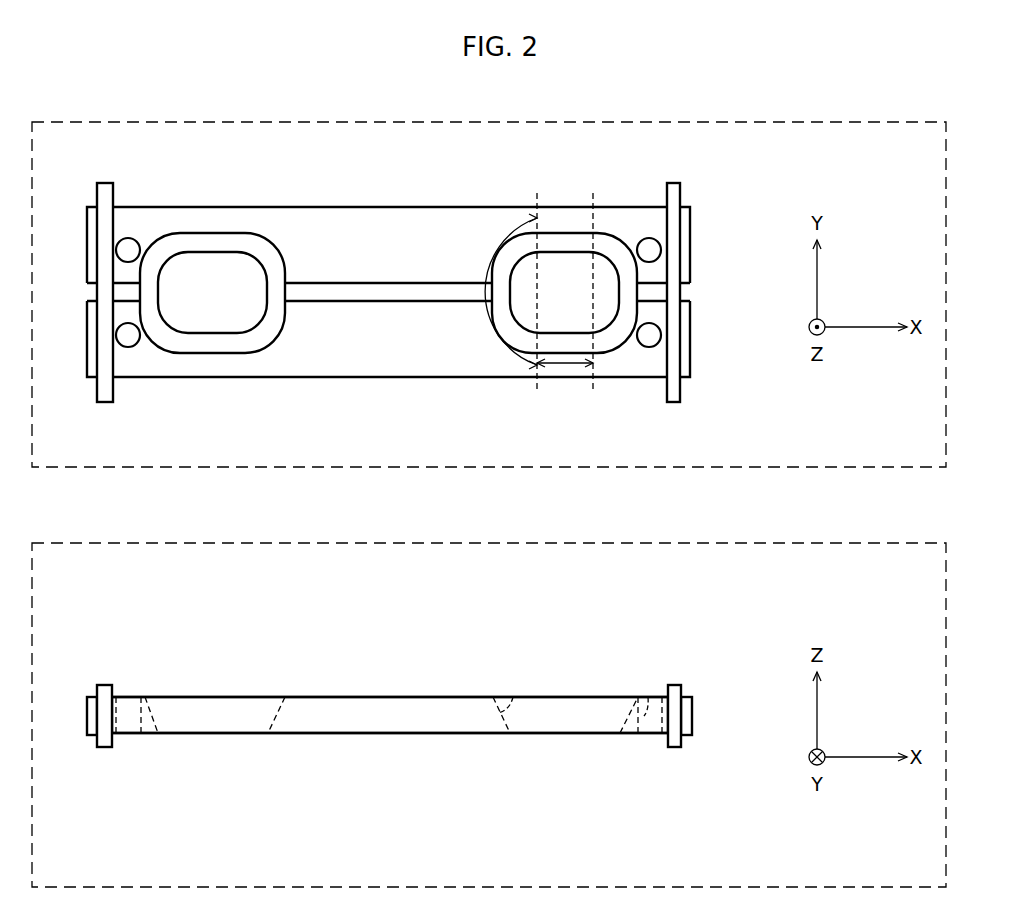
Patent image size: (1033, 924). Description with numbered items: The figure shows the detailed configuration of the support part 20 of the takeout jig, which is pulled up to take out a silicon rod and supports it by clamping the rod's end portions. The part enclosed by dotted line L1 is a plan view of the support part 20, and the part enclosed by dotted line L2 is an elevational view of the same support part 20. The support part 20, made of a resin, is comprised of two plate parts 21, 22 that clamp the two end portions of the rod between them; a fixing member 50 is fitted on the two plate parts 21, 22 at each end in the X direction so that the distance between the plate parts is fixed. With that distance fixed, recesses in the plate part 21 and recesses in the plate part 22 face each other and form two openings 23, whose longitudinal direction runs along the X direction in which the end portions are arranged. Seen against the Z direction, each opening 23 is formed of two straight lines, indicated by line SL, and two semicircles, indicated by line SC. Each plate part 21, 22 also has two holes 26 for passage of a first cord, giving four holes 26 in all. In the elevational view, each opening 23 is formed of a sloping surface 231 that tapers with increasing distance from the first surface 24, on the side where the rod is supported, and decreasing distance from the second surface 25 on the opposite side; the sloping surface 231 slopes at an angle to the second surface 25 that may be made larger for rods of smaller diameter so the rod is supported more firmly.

The support part 20 is at (413, 300).
The plate part 21 is at (690, 333).
The plate part 22 is at (690, 243).
The opening 23 is at (586, 231).
The sloping surface 231 is at (512, 258).
The first surface 24 is at (353, 255).
The second surface 25 is at (313, 733).
The hole 26 is at (645, 346).
The fixing member 50 is at (672, 402).
The line SC is at (497, 347).
The line SL is at (568, 366).
The dotted line L1 is at (489, 279).
The dotted line L2 is at (489, 699).